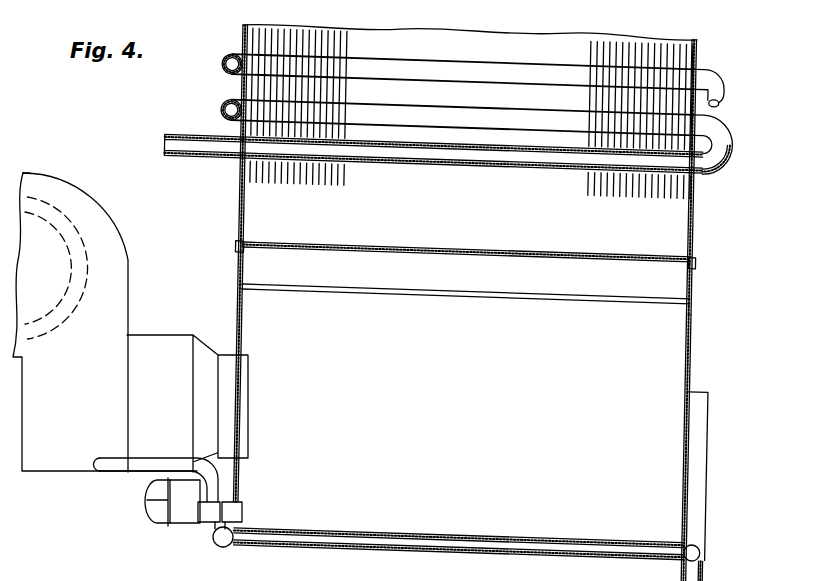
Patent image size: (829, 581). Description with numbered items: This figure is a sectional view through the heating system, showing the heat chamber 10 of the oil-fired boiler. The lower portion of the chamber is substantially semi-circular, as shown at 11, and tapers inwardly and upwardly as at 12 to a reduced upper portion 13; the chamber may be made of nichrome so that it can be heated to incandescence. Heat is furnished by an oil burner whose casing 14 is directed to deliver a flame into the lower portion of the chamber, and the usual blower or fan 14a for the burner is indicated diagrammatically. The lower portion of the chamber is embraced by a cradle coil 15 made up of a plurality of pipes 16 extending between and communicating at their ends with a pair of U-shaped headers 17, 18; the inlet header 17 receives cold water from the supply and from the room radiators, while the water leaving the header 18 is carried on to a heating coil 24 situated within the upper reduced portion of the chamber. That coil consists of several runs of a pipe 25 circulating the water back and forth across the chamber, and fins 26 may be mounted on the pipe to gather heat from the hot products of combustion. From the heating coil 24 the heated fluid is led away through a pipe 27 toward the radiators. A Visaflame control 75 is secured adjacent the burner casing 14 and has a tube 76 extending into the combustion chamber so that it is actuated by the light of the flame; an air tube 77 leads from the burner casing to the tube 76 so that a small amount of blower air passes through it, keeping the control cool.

The heat chamber 10 is at (690, 232).
The semi-circular lower portion 11 is at (668, 488).
The inwardly tapering portion 12 is at (668, 282).
The reduced upper portion 13 is at (456, 58).
The burner casing 14 is at (174, 345).
The blower 14a is at (112, 218).
The cradle coil 15 is at (396, 552).
The pipes 16 is at (332, 546).
The inlet header 17 is at (700, 455).
The header 18 is at (224, 482).
The heating coil 24 is at (733, 153).
The pipe 25 is at (477, 160).
The fins 26 is at (344, 180).
The pipe 27 is at (720, 100).
The Visaflame control 75 is at (155, 513).
The tube 76 is at (192, 513).
The air tube 77 is at (148, 462).